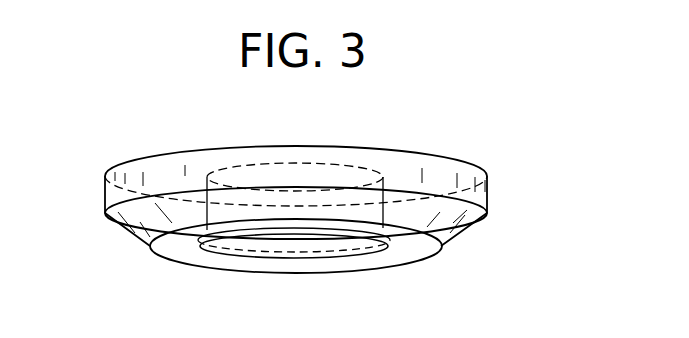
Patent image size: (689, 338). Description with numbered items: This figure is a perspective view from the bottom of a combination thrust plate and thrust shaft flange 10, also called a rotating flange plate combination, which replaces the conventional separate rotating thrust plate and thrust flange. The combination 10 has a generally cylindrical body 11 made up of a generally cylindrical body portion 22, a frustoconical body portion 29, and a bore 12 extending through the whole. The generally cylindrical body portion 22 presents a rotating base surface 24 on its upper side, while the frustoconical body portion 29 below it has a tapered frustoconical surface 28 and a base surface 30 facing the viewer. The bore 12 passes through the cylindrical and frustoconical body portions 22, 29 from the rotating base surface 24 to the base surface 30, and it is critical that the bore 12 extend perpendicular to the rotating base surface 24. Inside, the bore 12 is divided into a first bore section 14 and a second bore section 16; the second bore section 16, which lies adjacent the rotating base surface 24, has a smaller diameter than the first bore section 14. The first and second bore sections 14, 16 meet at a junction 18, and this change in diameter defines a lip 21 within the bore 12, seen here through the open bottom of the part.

The combination thrust plate and thrust shaft flange 10 is at (143, 128).
The generally cylindrical body 11 is at (105, 183).
The bore 12 is at (190, 252).
The first bore section 14 is at (390, 242).
The second bore section 16 is at (213, 182).
The junction 18 is at (400, 198).
The lip 21 is at (306, 240).
The generally cylindrical body portion 22 is at (487, 190).
The rotating base surface 24 is at (442, 172).
The frustoconical surface 28 is at (453, 243).
The frustoconical body portion 29 is at (477, 228).
The base surface 30 is at (243, 262).